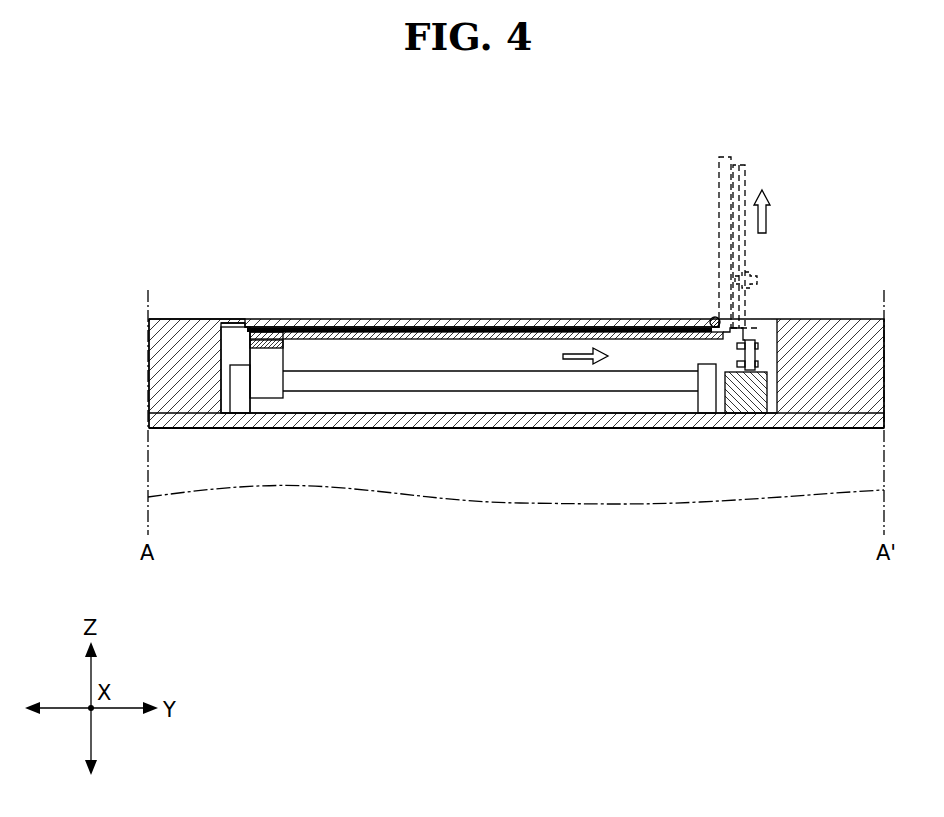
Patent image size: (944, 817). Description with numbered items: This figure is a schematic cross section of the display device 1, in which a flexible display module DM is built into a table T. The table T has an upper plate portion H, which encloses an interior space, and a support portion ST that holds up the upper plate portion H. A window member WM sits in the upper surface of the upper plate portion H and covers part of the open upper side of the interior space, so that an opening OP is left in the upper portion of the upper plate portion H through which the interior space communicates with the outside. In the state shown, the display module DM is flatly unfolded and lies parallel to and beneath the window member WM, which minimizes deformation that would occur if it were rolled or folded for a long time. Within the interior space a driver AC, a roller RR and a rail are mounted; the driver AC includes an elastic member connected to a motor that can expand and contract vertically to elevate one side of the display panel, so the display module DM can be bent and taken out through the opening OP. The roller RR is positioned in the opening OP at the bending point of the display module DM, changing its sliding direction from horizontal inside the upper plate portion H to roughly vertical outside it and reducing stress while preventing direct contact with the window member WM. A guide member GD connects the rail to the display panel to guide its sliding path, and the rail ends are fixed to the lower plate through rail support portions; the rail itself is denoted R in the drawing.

The display device 1 is at (180, 150).
The upper plate portion H is at (158, 368).
The support portion ST is at (158, 452).
The table T is at (98, 370).
The guide member GD is at (272, 358).
The display module DM is at (440, 330).
The window member WM is at (326, 322).
The roller RR is at (710, 319).
The roller R is at (385, 380).
The opening OP is at (768, 322).
The driver AC is at (858, 243).